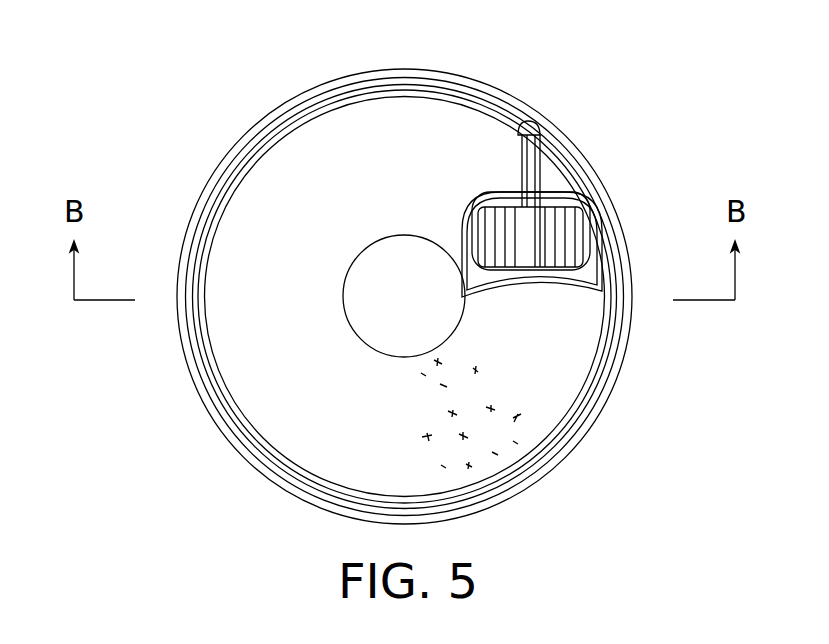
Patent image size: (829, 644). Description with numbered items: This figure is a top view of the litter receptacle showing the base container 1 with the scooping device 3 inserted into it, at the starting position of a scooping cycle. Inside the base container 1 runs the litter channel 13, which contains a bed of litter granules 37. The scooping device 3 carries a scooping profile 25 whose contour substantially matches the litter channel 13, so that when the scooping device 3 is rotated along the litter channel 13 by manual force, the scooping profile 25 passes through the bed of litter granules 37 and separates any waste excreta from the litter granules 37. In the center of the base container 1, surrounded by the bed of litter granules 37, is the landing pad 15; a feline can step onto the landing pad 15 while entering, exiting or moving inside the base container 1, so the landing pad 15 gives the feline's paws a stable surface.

The base container 1 is at (180, 442).
The scooping device 3 is at (547, 182).
The litter channel 13 is at (295, 298).
The landing pad 15 is at (420, 300).
The scooping profile 25 is at (540, 278).
The litter granules 37 is at (467, 440).